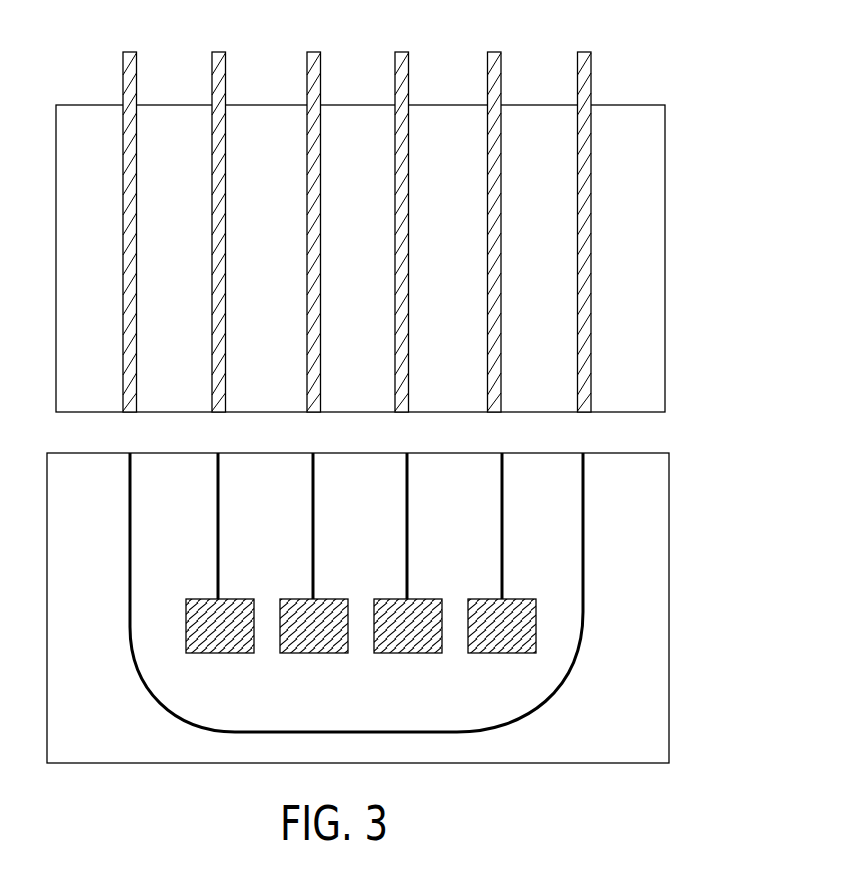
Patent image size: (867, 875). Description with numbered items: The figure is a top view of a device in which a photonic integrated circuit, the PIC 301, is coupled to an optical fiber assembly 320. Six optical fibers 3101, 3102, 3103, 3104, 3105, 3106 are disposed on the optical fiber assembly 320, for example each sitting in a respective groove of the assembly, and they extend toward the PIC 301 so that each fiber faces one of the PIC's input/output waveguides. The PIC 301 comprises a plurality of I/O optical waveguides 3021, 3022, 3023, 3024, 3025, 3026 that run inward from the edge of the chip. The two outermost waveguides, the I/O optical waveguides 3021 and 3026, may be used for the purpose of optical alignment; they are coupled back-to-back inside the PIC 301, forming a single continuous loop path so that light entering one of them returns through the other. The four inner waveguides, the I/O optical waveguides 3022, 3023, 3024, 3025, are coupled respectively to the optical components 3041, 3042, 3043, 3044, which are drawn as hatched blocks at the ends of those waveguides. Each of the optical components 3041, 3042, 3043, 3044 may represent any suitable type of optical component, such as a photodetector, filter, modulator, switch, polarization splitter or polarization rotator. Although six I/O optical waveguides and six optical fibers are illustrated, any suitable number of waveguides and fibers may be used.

The optical fiber assembly 320 is at (665, 257).
The PIC 301 is at (669, 590).
The optical fiber 3101 is at (123, 53).
The optical fiber 3102 is at (212, 53).
The optical fiber 3103 is at (307, 53).
The optical fiber 3104 is at (395, 53).
The optical fiber 3105 is at (488, 53).
The optical fiber 3106 is at (578, 53).
The I/O optical waveguide 3021 is at (128, 498).
The I/O optical waveguide 3022 is at (218, 498).
The I/O optical waveguide 3023 is at (312, 518).
The I/O optical waveguide 3024 is at (406, 500).
The I/O optical waveguide 3025 is at (500, 513).
The I/O optical waveguide 3026 is at (582, 515).
The optical component 3041 is at (222, 655).
The optical component 3042 is at (316, 655).
The optical component 3043 is at (410, 655).
The optical component 3044 is at (503, 655).